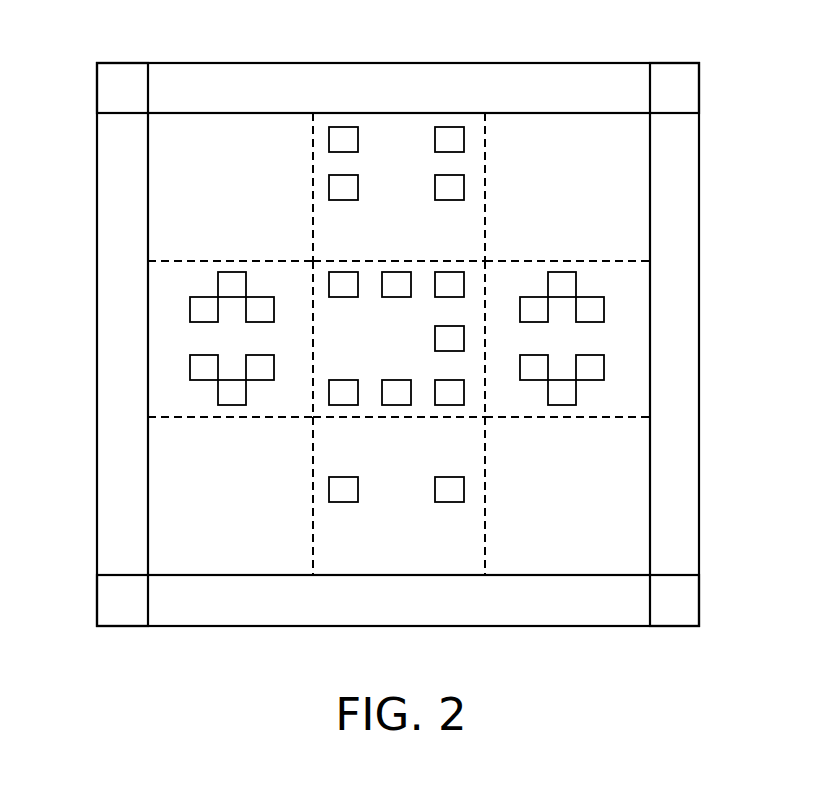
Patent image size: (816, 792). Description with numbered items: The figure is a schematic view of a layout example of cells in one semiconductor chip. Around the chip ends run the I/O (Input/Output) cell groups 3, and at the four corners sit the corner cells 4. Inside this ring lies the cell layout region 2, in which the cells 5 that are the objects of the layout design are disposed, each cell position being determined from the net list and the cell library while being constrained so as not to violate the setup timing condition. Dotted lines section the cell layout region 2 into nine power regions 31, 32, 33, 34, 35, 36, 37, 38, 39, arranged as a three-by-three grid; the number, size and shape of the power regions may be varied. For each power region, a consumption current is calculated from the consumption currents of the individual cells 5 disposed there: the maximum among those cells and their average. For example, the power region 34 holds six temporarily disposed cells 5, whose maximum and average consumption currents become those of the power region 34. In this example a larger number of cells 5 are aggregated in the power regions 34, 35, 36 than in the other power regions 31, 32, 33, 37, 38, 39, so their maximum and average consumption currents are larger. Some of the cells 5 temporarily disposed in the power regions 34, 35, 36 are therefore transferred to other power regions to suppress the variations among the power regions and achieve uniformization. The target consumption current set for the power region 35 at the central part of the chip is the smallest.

The cell layout region 2 is at (529, 128).
The I/O cell groups 3 is at (189, 80).
The corner cells 4 is at (118, 87).
The cells 5 is at (397, 314).
The power region 31 is at (221, 198).
The power region 32 is at (384, 198).
The power region 33 is at (552, 198).
The power region 34 is at (221, 351).
The power region 35 is at (384, 351).
The power region 36 is at (552, 351).
The power region 37 is at (221, 498).
The power region 38 is at (384, 498).
The power region 39 is at (552, 498).